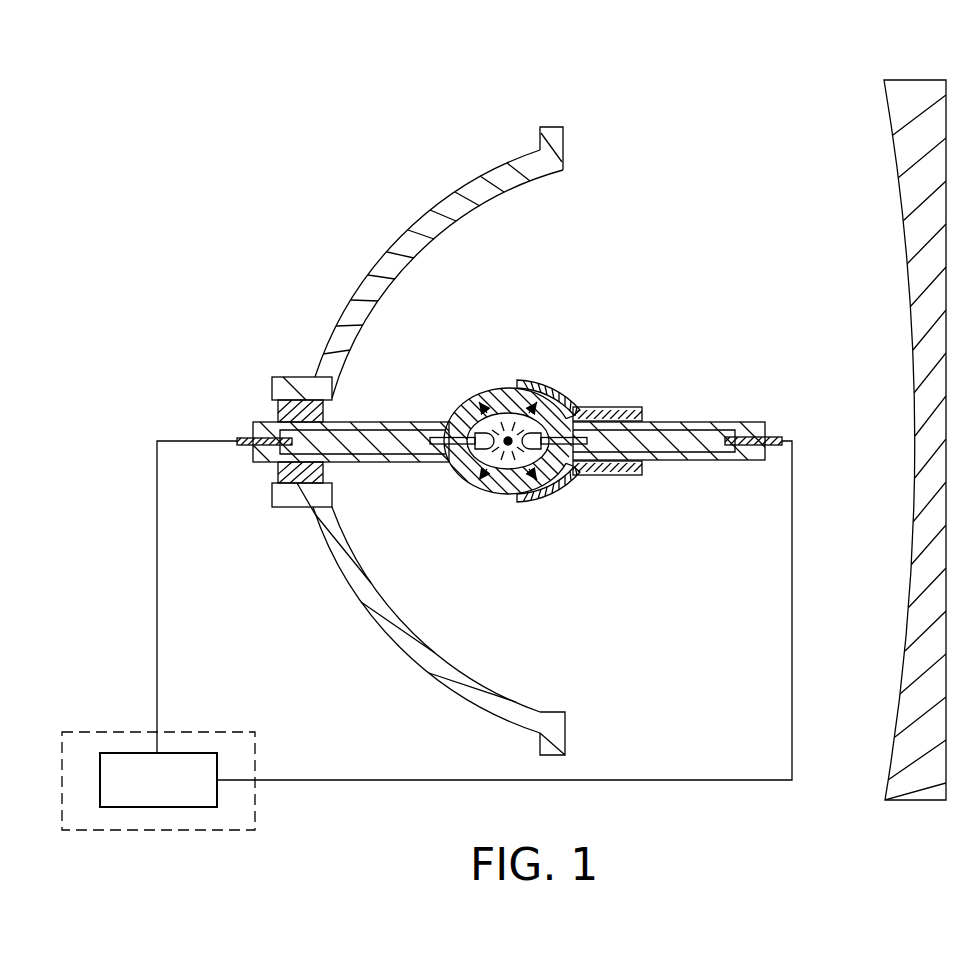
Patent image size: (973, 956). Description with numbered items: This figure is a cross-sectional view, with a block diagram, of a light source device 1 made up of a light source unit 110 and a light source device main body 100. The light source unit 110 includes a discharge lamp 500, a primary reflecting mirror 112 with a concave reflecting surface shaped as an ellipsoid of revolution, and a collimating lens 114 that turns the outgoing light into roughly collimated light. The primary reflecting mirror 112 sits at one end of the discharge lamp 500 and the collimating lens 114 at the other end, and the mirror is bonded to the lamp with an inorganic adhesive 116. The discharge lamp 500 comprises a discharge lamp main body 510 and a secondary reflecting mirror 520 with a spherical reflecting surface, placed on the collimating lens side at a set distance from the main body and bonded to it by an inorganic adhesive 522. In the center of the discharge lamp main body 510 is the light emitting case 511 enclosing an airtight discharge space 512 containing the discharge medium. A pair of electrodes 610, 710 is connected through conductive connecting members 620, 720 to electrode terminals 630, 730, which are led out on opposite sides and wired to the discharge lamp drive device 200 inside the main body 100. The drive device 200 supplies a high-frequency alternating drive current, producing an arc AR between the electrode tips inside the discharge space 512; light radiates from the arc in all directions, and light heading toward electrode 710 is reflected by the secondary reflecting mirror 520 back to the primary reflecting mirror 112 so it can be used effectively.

The light source device 1 is at (764, 90).
The light source unit 110 is at (318, 120).
The primary reflecting mirror 112 is at (435, 218).
The collimating lens 114 is at (895, 139).
The inorganic adhesive 116 is at (283, 410).
The discharge lamp 500 is at (655, 300).
The discharge lamp main body 510 is at (480, 393).
The light emitting case 511 is at (468, 400).
The discharge space 512 is at (503, 473).
The secondary reflecting mirror 520 is at (556, 500).
The inorganic adhesive 522 is at (643, 468).
The electrode 610 is at (468, 468).
The connecting member 620 is at (378, 440).
The electrode terminal 630 is at (237, 440).
The electrode 710 is at (578, 406).
The connecting member 720 is at (672, 440).
The electrode terminal 730 is at (745, 421).
The discharge lamp drive device 200 is at (122, 752).
The light source device main body 100 is at (228, 731).
The arc AR is at (508, 436).